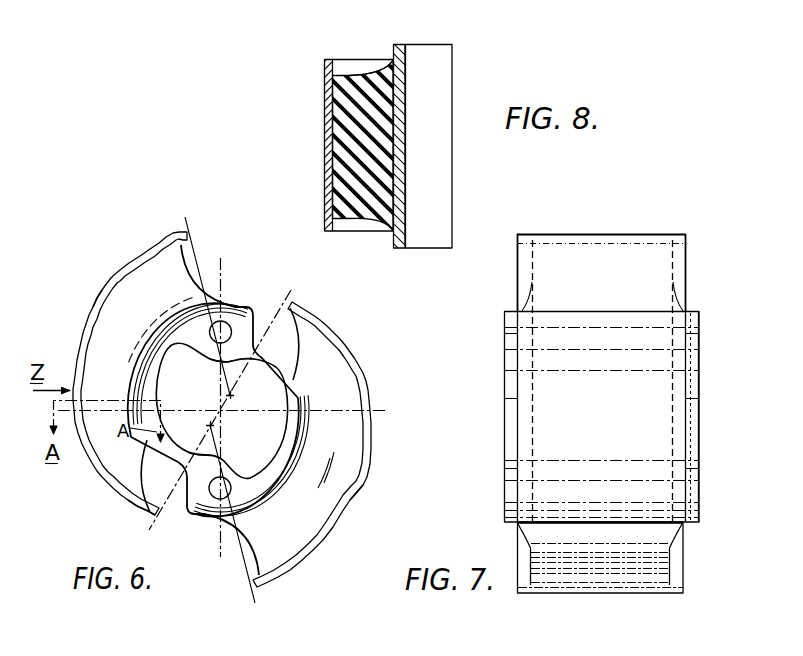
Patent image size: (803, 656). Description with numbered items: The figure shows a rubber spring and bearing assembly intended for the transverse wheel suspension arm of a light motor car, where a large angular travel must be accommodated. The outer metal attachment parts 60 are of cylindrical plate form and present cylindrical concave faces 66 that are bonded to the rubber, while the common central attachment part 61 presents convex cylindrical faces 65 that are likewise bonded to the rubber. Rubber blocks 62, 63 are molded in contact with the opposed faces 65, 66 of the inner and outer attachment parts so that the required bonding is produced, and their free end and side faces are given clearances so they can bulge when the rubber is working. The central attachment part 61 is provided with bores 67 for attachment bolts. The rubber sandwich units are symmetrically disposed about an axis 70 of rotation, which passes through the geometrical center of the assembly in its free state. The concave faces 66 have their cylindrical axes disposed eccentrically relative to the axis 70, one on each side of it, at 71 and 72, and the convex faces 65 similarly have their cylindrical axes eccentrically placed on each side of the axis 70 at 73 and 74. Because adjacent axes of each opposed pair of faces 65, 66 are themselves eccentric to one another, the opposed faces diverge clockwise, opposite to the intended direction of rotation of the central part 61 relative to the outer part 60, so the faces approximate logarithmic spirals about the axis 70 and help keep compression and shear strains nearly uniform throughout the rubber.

In FIG. 8, the outer metal attachment parts 60 is at (331, 151).
In FIG. 7, the outer metal attachment parts 60 is at (688, 280).
In FIG. 6, the outer metal attachment parts 60 is at (334, 343).
In FIG. 8, the common central attachment part 61 is at (412, 124).
In FIG. 7, the common central attachment part 61 is at (505, 397).
In FIG. 6, the common central attachment part 61 is at (293, 385).
In FIG. 8, the rubber block 62 is at (337, 120).
In FIG. 7, the rubber block 62 is at (592, 256).
In FIG. 6, the rubber block 62 is at (133, 493).
In FIG. 7, the rubber block 63 is at (658, 537).
In FIG. 6, the rubber block 63 is at (331, 499).
In FIG. 8, the convex cylindrical faces 65 is at (381, 72).
In FIG. 6, the convex cylindrical faces 65 is at (138, 365).
In FIG. 8, the cylindrical concave faces 66 is at (338, 188).
In FIG. 6, the cylindrical concave faces 66 is at (101, 296).
In FIG. 7, the bores 67 is at (505, 332).
In FIG. 6, the bores 67 is at (229, 324).
In FIG. 6, the axis of rotation 70 is at (230, 432).
In FIG. 6, the cylindrical axis of concave face 71 is at (213, 438).
In FIG. 6, the cylindrical axis of concave face 72 is at (227, 381).
In FIG. 6, the cylindrical axis of convex face 73 is at (233, 399).
In FIG. 6, the cylindrical axis of convex face 74 is at (212, 422).